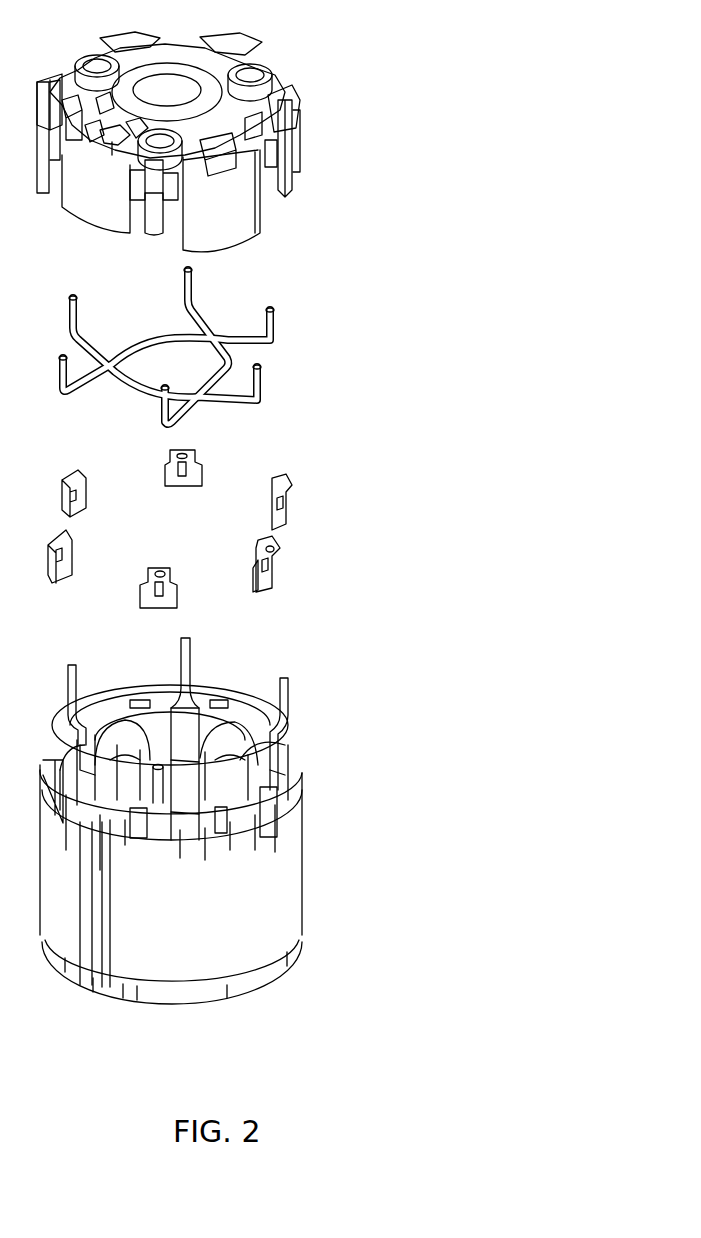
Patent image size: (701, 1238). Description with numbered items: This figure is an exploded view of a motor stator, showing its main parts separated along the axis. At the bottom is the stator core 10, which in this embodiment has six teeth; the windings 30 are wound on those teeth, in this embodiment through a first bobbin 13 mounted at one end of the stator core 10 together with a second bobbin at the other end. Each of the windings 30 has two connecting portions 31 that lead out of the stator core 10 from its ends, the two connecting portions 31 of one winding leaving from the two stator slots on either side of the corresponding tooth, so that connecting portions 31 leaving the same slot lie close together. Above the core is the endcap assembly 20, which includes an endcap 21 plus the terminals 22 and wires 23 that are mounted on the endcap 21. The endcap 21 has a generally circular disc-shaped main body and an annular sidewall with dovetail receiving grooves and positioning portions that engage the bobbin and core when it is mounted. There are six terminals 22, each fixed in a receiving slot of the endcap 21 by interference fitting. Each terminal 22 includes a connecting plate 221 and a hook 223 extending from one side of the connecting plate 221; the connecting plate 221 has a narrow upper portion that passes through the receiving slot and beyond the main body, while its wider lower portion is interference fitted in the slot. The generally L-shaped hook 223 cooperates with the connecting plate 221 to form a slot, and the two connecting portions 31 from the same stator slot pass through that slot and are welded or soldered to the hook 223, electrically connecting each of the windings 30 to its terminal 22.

The stator core 10 is at (277, 880).
The first bobbin 13 is at (135, 683).
The endcap assembly 20 is at (385, 166).
The endcap 21 is at (290, 172).
The terminals 22 is at (283, 475).
The wires 23 is at (280, 313).
The windings 30 is at (243, 703).
The connecting portions 31 is at (187, 655).
The connecting plate 221 is at (265, 580).
The hook 223 is at (275, 555).